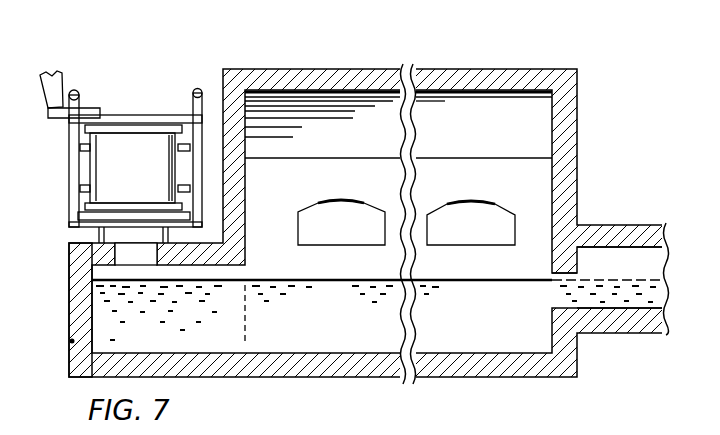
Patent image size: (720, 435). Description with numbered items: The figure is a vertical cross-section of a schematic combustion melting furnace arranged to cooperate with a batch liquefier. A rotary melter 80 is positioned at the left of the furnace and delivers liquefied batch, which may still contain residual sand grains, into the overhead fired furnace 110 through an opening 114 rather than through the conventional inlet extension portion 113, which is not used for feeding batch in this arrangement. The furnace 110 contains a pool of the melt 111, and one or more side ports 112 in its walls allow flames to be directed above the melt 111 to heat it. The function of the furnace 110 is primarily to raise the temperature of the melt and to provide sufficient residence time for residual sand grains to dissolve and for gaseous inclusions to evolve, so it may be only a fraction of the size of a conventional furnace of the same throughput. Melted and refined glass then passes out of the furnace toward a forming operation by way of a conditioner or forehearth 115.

The rotary melter 80 is at (62, 176).
The overhead fired furnace 110 is at (339, 66).
The melt 111 is at (297, 279).
The side ports 112 is at (331, 200).
The inlet extension portion 113 is at (69, 307).
The opening 114 is at (142, 258).
The conditioner or forehearth 115 is at (630, 223).